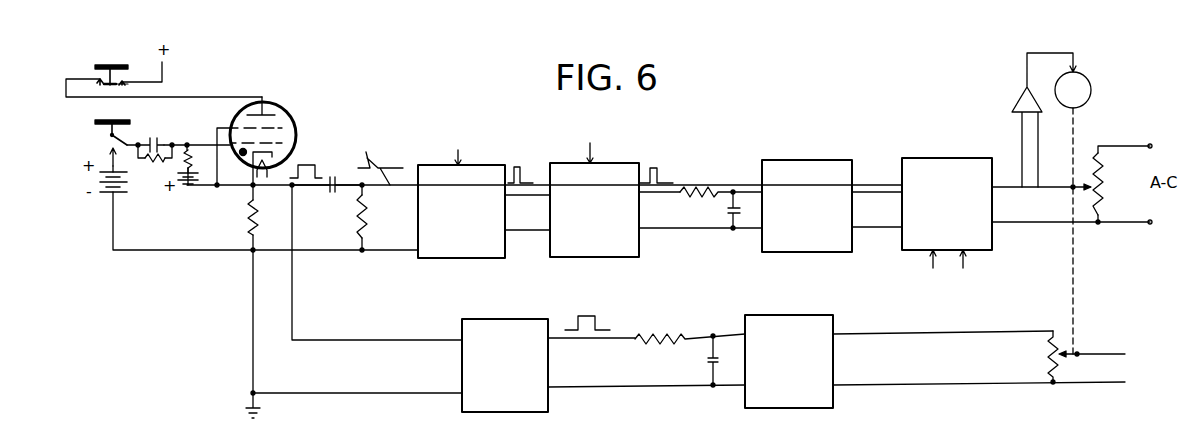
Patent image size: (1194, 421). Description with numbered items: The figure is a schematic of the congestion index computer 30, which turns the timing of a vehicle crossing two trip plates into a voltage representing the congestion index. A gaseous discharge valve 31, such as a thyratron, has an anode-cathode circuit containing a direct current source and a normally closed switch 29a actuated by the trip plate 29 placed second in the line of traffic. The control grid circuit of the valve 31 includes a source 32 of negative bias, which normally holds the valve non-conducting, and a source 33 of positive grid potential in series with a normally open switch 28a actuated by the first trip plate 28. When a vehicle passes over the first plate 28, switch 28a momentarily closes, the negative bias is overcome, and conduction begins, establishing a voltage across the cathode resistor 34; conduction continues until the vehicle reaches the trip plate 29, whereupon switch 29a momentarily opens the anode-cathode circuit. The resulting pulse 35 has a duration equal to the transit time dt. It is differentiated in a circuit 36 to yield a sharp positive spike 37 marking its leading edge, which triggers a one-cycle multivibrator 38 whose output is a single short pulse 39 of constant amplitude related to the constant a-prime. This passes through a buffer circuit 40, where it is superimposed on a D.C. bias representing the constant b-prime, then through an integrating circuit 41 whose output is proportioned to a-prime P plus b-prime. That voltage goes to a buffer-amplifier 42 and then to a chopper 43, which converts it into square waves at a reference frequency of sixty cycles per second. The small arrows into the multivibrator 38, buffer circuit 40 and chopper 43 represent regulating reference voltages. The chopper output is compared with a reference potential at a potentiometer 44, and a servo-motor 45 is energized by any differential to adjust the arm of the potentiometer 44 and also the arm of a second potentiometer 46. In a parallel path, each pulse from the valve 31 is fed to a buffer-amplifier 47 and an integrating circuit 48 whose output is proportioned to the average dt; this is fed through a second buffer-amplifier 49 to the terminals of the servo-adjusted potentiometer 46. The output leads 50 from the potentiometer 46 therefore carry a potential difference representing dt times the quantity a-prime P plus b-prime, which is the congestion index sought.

The first trip plate 28 is at (98, 118).
The normally open switch 28a is at (110, 140).
The trip plate 29 is at (112, 65).
The normally closed switch 29a is at (125, 83).
The congestion index computer 30 is at (711, 290).
The gaseous discharge valve 31 is at (290, 120).
The source of negative bias 32 is at (183, 190).
The source of positive grid potential 33 is at (103, 194).
The cathode resistor 34 is at (247, 213).
The pulse 35 is at (318, 154).
The differentiating circuit 36 is at (354, 203).
The positive spike 37 is at (366, 152).
The one-cycle multivibrator 38 is at (472, 165).
The pulse 39 is at (514, 167).
The buffer circuit 40 is at (622, 163).
The integrating circuit 41 is at (721, 202).
The buffer-amplifier 42 is at (835, 160).
The chopper 43 is at (957, 158).
The potentiometer 44 is at (1102, 178).
The servo-motor 45 is at (1091, 88).
The second potentiometer 46 is at (1050, 362).
The buffer-amplifier 47 is at (462, 330).
The integrating circuit 48 is at (702, 348).
The second buffer-amplifier 49 is at (822, 318).
The output leads 50 is at (1134, 368).